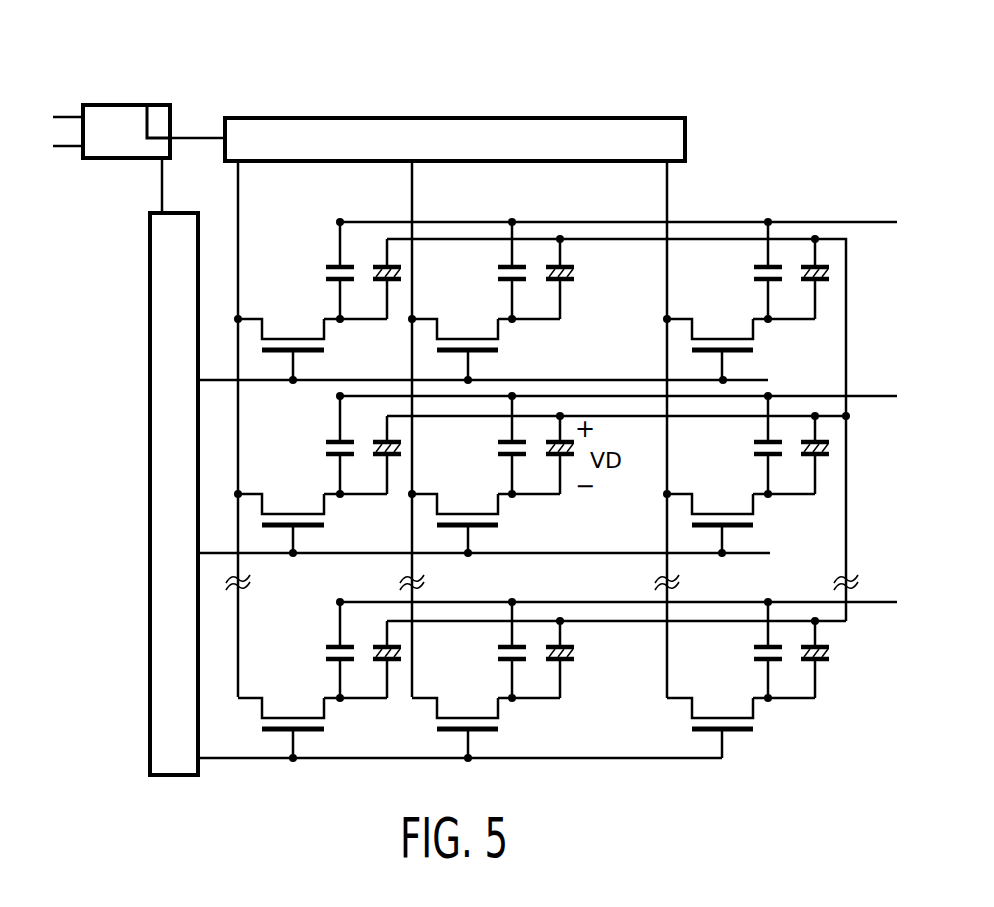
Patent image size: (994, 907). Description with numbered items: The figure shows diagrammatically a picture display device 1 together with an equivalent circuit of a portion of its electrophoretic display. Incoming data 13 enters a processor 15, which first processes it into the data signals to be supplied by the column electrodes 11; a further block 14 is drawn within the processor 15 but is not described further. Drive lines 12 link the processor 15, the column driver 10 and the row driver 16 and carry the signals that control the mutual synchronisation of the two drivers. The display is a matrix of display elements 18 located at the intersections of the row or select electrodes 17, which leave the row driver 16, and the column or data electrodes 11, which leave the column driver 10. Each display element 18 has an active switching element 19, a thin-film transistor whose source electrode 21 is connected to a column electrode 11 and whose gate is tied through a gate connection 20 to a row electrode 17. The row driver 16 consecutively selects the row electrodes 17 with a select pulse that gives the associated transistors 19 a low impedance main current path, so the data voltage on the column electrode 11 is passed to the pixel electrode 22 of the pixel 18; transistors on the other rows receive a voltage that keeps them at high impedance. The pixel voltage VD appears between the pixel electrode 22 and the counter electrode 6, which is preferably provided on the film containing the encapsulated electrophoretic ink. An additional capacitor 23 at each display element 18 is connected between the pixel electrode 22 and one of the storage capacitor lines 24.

The picture display device 1 is at (152, 800).
The counter electrode 6 is at (849, 318).
The column driver 10 is at (555, 132).
The column electrodes 11 is at (240, 198).
The drive lines 12 is at (193, 138).
The incoming data 13 is at (71, 116).
The controller unit 14 is at (157, 120).
The processor 15 is at (117, 120).
The row driver 16 is at (165, 512).
The row electrodes 17 is at (221, 376).
The display element 18 is at (403, 272).
The active switching elements 19 is at (325, 345).
The gate connection 20 is at (297, 384).
The source electrodes 21 is at (254, 309).
The pixel electrodes 22 is at (328, 315).
The additional capacitor 23 is at (325, 268).
The storage capacitor lines 24 is at (876, 221).